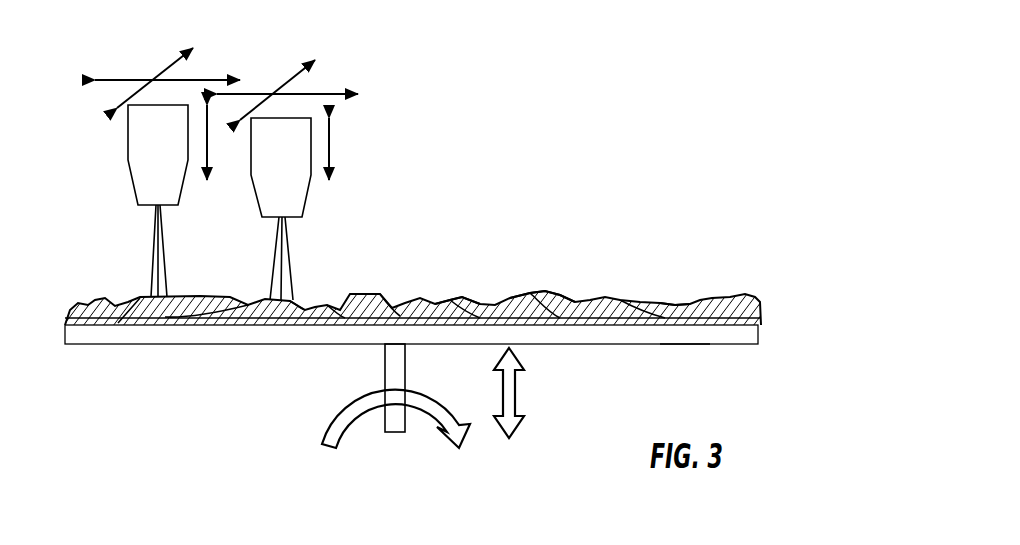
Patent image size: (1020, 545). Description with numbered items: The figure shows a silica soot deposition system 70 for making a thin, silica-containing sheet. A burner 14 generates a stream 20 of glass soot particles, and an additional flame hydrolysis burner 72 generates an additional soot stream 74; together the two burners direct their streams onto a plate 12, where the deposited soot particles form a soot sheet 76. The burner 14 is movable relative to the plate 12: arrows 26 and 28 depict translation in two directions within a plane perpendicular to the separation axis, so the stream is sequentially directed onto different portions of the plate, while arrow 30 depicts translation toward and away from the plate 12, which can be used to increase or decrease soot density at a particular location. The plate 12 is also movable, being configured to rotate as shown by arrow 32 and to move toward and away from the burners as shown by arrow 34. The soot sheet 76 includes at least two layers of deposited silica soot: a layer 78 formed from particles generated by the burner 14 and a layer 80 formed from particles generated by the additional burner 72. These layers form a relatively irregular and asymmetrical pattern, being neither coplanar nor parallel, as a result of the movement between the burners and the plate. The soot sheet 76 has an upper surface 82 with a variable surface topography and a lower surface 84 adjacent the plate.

The plate 12 is at (752, 335).
The burner 14 is at (132, 152).
The stream 20 is at (155, 243).
The arrow 26 is at (198, 80).
The arrow 28 is at (170, 62).
The arrow 30 is at (210, 153).
The arrow 32 is at (332, 425).
The arrow 34 is at (512, 398).
The system 70 is at (632, 88).
The additional flame hydrolysis burner 72 is at (307, 208).
The additional soot stream 74 is at (293, 270).
The soot sheet 76 is at (742, 298).
The layer 78 is at (547, 290).
The layer 80 is at (468, 298).
The upper surface 82 is at (678, 300).
The lower surface 84 is at (685, 345).